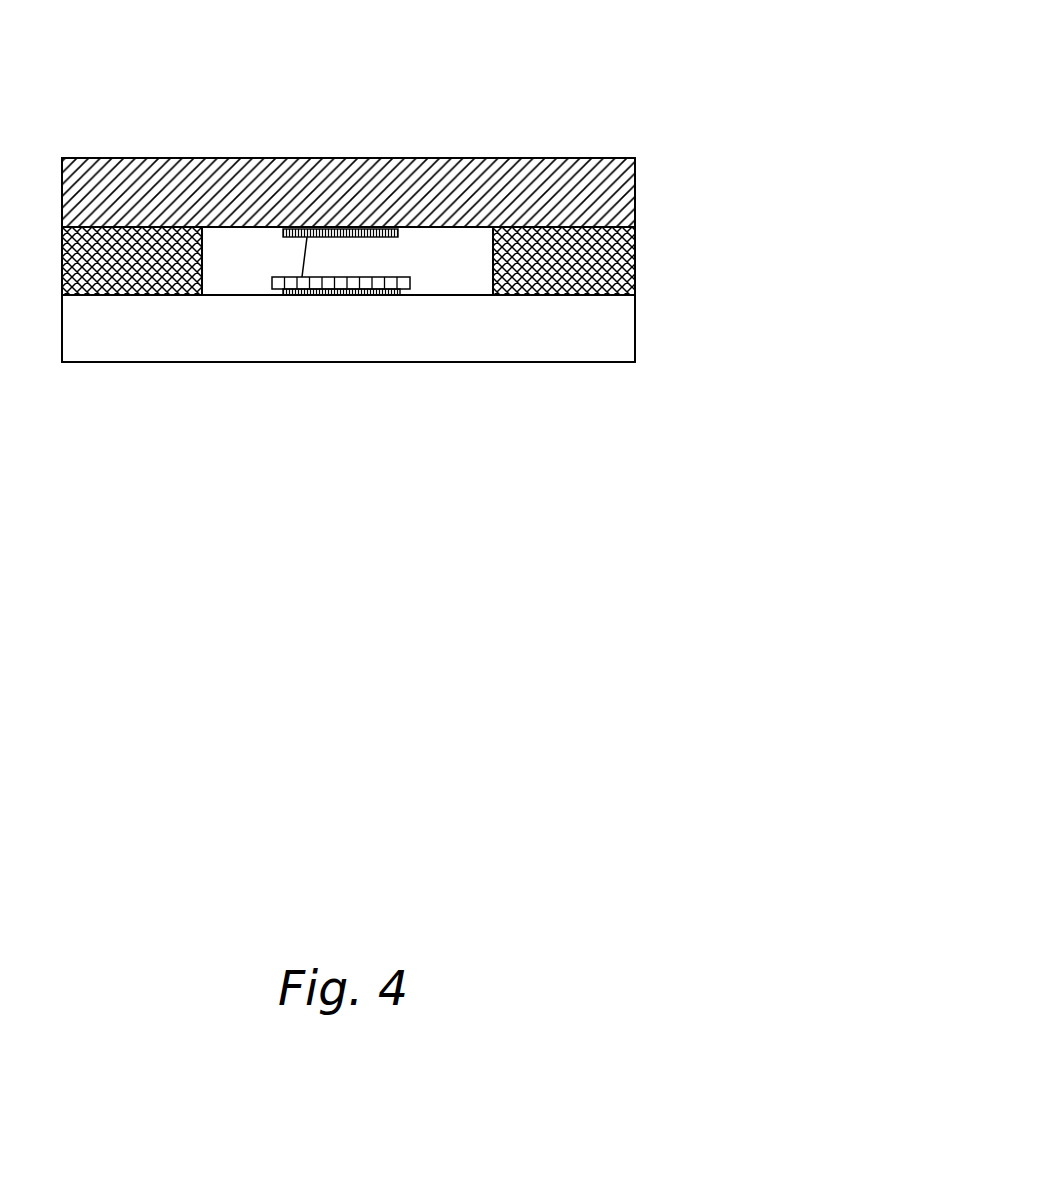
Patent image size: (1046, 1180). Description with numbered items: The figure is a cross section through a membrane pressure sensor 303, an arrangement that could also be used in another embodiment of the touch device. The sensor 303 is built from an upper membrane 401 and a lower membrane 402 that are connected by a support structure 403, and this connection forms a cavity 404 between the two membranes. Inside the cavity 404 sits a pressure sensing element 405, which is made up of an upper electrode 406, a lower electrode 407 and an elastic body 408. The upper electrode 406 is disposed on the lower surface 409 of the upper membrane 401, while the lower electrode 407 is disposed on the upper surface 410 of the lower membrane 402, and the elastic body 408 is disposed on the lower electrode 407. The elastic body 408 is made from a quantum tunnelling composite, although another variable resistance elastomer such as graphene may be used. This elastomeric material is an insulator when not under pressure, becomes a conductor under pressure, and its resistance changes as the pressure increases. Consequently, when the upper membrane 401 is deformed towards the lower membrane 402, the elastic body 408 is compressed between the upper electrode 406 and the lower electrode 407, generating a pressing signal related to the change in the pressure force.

The membrane pressure sensor 303 is at (596, 75).
The upper membrane 401 is at (620, 195).
The lower membrane 402 is at (620, 333).
The support structure 403 is at (620, 260).
The cavity 404 is at (482, 272).
The pressure sensing element 405 is at (275, 265).
The upper electrode 406 is at (297, 295).
The lower electrode 407 is at (327, 295).
The elastic body 408 is at (409, 285).
The lower surface of upper membrane 409 is at (245, 227).
The upper surface of lower membrane 410 is at (477, 295).